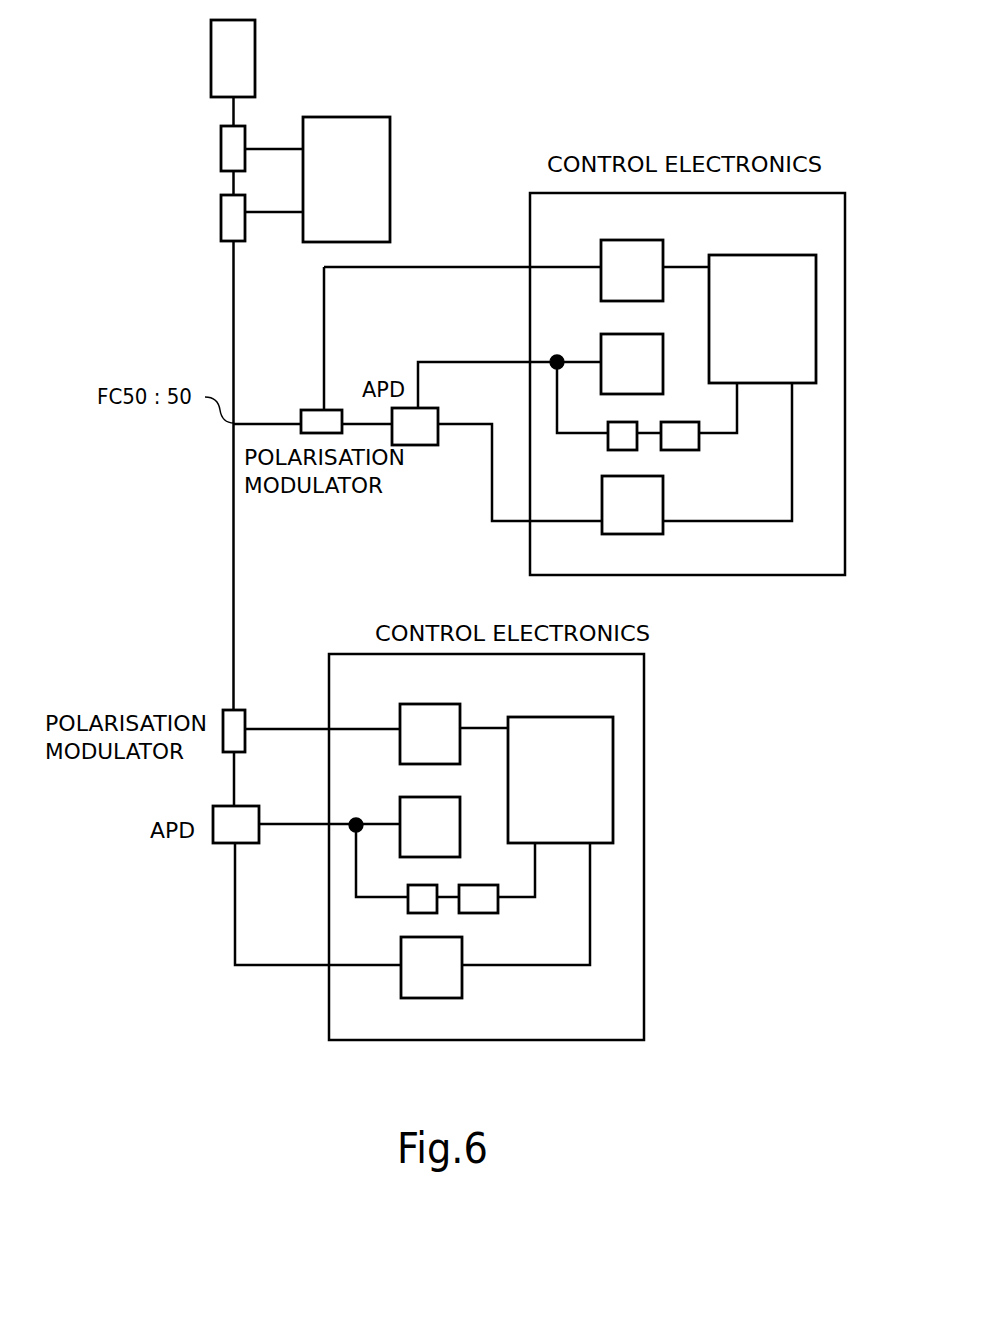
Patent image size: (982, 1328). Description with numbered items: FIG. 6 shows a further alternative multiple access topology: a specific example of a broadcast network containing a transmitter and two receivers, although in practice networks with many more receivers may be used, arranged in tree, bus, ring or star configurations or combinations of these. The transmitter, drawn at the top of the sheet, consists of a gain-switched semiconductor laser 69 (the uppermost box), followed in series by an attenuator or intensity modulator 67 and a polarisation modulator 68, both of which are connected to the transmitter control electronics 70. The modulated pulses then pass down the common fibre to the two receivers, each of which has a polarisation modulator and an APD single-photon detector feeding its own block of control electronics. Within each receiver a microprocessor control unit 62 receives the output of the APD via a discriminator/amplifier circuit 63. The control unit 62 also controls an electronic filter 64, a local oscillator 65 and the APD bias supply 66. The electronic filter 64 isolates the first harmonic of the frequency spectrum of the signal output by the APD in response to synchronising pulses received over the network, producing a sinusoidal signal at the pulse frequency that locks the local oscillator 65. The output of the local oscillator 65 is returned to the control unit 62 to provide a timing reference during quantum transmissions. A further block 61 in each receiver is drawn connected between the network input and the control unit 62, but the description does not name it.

The pulse generator 61 is at (613, 252).
The microprocessor control unit 62 is at (757, 267).
The discriminator/amplifier circuit 63 is at (620, 350).
The electronic filter 64 is at (620, 438).
The local oscillator 65 is at (693, 442).
The APD bias supply 66 is at (625, 505).
The attenuator or intensity modulator 67 is at (228, 145).
The polarisation modulator 68 is at (228, 211).
The light source 69 is at (238, 57).
The control electronics 70 is at (367, 150).